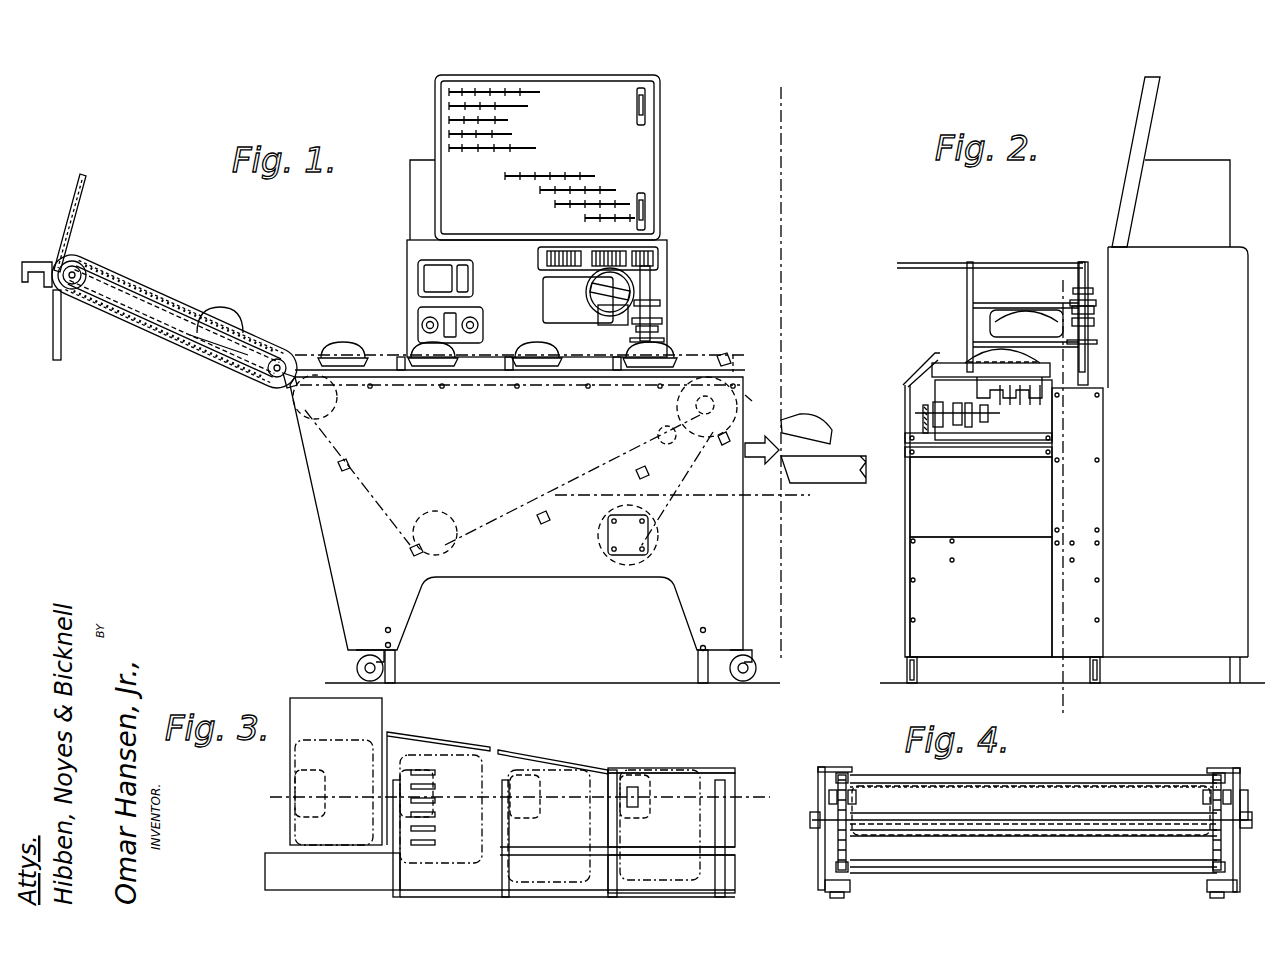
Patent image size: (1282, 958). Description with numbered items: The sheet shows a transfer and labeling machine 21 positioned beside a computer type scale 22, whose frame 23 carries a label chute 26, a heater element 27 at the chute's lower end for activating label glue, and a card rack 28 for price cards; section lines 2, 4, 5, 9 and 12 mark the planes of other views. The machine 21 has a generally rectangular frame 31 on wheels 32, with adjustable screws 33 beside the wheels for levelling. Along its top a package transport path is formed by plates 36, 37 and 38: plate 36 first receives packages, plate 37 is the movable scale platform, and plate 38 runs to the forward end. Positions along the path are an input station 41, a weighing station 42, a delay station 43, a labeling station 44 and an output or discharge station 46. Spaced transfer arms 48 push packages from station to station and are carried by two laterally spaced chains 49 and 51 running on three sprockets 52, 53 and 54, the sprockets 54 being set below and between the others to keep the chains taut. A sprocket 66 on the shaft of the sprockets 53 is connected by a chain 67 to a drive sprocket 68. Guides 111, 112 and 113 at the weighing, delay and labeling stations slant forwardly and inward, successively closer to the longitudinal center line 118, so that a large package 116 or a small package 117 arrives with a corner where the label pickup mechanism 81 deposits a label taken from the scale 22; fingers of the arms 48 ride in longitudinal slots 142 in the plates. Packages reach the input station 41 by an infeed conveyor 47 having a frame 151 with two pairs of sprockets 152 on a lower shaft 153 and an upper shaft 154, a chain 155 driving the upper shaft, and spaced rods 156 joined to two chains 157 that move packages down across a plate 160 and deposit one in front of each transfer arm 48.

In FIG. 1, the section line 2- 2 is at (762, 109).
In FIG. 1, the section line 4- 4 is at (320, 340).
In FIG. 1, the section line 5- 5 is at (768, 364).
In FIG. 1, the section line 9- 9 is at (568, 536).
In FIG. 2, the section line 12- 12 is at (1112, 283).
In FIG. 1, the transfer and labeling machine 21 is at (287, 545).
In FIG. 1, the computer type scale 22 is at (388, 213).
In FIG. 2, the computer type scale 22 is at (1117, 200).
In FIG. 1, the frame 23 is at (662, 264).
In FIG. 1, the label chute 26 is at (600, 317).
In FIG. 1, the heater element 27 is at (590, 333).
In FIG. 1, the card rack 28 is at (568, 150).
In FIG. 1, the frame 31 is at (348, 595).
In FIG. 2, the frame 31 is at (906, 578).
In FIG. 1, the wheels 32 is at (357, 665).
In FIG. 2, the wheels 32 is at (918, 680).
In FIG. 1, the adjustable screws 33 is at (396, 662).
In FIG. 3, the plate 36 is at (306, 713).
In FIG. 3, the plate 37 is at (488, 752).
In FIG. 3, the plate 38 is at (602, 775).
In FIG. 1, the input station 41 is at (377, 348).
In FIG. 3, the input station 41 is at (305, 694).
In FIG. 1, the weighing station 42 is at (488, 336).
In FIG. 3, the weighing station 42 is at (455, 738).
In FIG. 1, the delay station 43 is at (561, 385).
In FIG. 3, the delay station 43 is at (568, 754).
In FIG. 1, the labeling station 44 is at (641, 383).
In FIG. 3, the labeling station 44 is at (668, 762).
In FIG. 1, the output or discharge station 46 is at (728, 347).
In FIG. 3, the output or discharge station 46 is at (751, 772).
In FIG. 1, the infeed conveyor 47 is at (48, 320).
In FIG. 2, the infeed conveyor 47 is at (962, 291).
In FIG. 1, the transfer arms 48 is at (384, 368).
In FIG. 2, the transfer arms 48 is at (950, 366).
In FIG. 3, the transfer arms 48 is at (612, 883).
In FIG. 2, the chain 49 is at (938, 435).
In FIG. 2, the chain 51 is at (968, 435).
In FIG. 1, the sprockets 52 is at (322, 405).
In FIG. 1, the sprockets 53 is at (752, 397).
In FIG. 1, the sprockets 54 is at (446, 514).
In FIG. 1, the sprocket 66 is at (646, 396).
In FIG. 1, the chain 67 is at (678, 512).
In FIG. 1, the drive sprocket 68 is at (656, 545).
In FIG. 1, the label pickup mechanism 81 is at (660, 318).
In FIG. 2, the label pickup mechanism 81 is at (1098, 323).
In FIG. 3, the guide 111 is at (396, 734).
In FIG. 3, the guide 112 is at (516, 754).
In FIG. 3, the guide 113 is at (703, 770).
In FIG. 3, the large package 116 is at (306, 833).
In FIG. 3, the small package 117 is at (307, 798).
In FIG. 3, the longitudinal center line 118 is at (760, 798).
In FIG. 2, the slots 142 is at (1018, 398).
In FIG. 1, the frame 151 is at (105, 305).
In FIG. 4, the frame 151 is at (820, 786).
In FIG. 1, the sprockets 152 is at (78, 268).
In FIG. 4, the sprockets 152 is at (1215, 843).
In FIG. 1, the shaft 153 is at (262, 370).
In FIG. 4, the shaft 153 is at (1075, 820).
In FIG. 1, the shaft 154 is at (80, 264).
In FIG. 1, the chain 155 is at (85, 178).
In FIG. 1, the rods 156 is at (190, 300).
In FIG. 4, the rods 156 is at (1010, 780).
In FIG. 1, the chains 157 is at (165, 332).
In FIG. 4, the chains 157 is at (1232, 772).
In FIG. 1, the plate 160 is at (212, 307).
In FIG. 4, the plate 160 is at (905, 793).